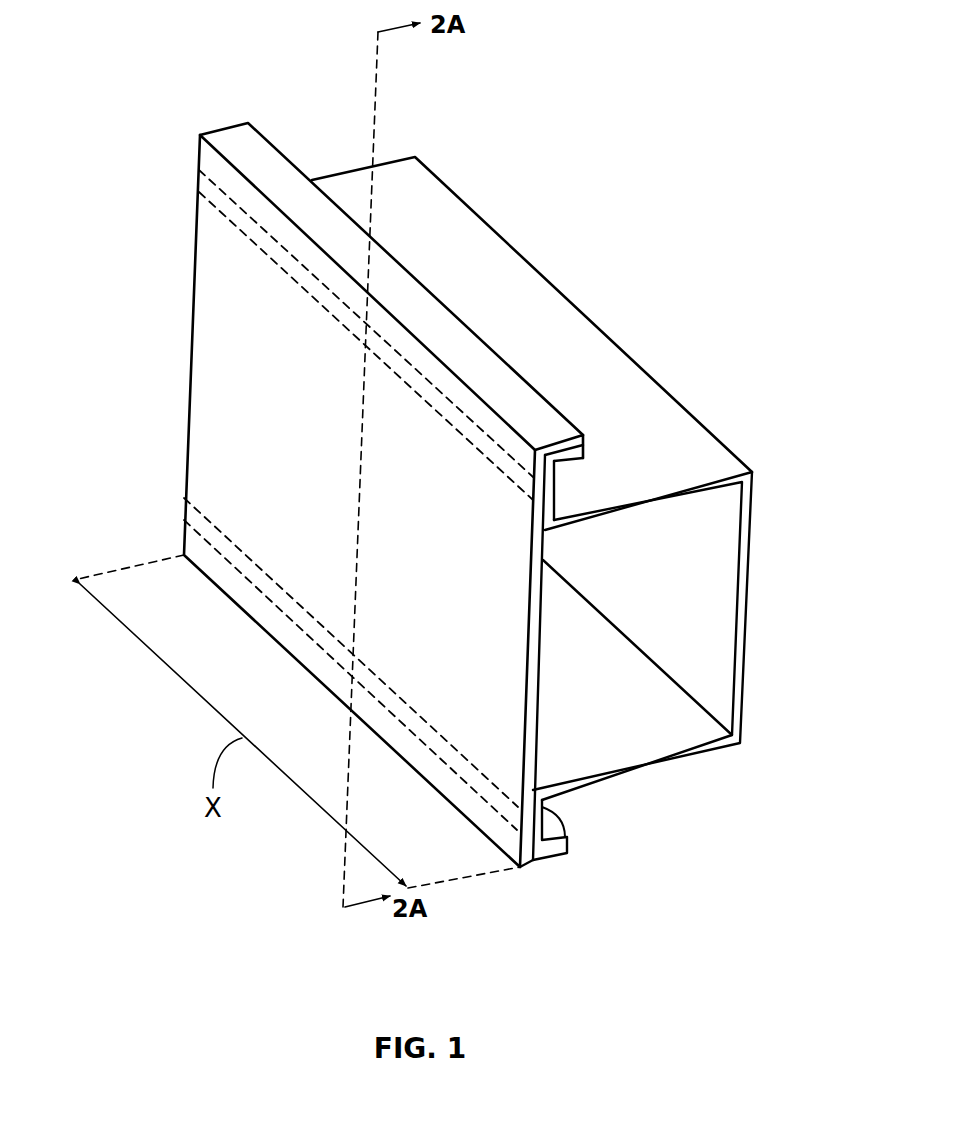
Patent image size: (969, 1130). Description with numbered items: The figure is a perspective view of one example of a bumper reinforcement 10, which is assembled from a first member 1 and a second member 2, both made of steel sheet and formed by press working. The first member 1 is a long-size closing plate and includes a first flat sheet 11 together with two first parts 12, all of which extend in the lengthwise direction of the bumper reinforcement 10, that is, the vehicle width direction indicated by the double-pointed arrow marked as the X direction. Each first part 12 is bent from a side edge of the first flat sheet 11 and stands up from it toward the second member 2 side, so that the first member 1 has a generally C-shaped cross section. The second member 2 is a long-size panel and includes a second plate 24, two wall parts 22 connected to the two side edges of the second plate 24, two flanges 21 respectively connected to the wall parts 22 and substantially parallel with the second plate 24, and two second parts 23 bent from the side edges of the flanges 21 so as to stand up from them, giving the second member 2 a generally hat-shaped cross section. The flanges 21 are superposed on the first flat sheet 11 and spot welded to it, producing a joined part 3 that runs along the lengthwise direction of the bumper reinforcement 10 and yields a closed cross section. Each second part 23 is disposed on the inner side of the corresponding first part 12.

The bumper reinforcement 10 is at (655, 126).
The first member 1 is at (189, 304).
The first flat sheet 11 is at (215, 460).
The first part 12 is at (257, 143).
The joined part 3 is at (207, 185).
The second member 2 is at (445, 172).
The flange 21 is at (555, 489).
The wall part 22 is at (710, 478).
The second part 23 is at (583, 458).
The second plate 24 is at (748, 585).